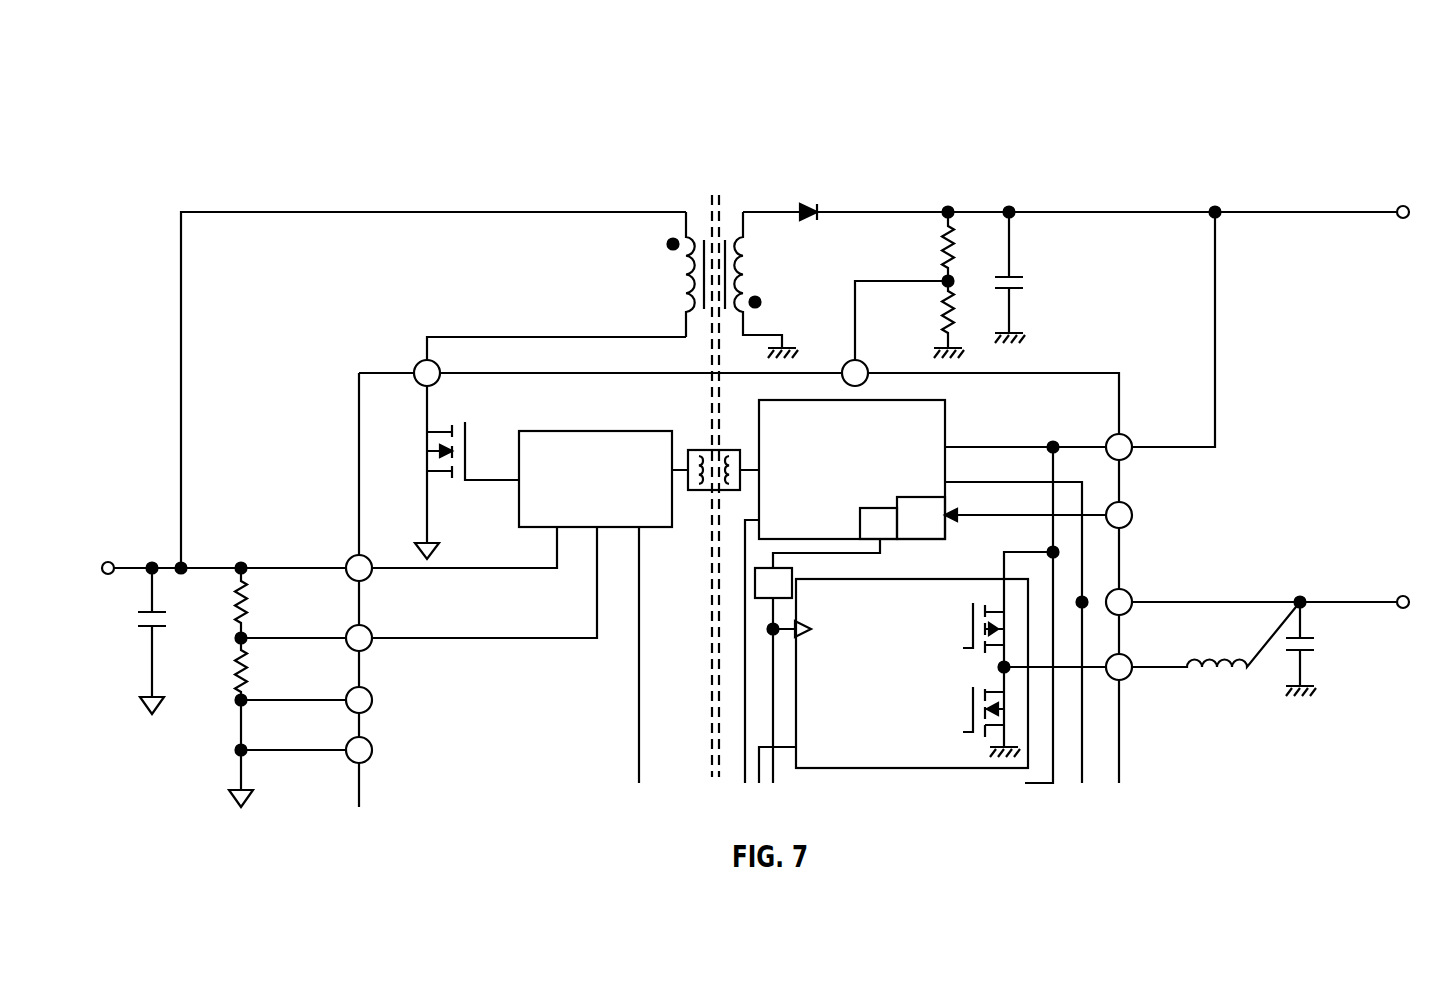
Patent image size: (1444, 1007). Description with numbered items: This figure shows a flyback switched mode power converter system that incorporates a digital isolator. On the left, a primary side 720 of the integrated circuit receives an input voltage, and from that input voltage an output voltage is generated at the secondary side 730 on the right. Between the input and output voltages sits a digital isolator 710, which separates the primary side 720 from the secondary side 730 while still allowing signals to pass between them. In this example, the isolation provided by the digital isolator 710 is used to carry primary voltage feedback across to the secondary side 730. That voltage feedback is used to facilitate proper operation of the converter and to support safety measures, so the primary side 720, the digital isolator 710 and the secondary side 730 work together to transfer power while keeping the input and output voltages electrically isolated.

The digital isolator 710 is at (697, 418).
The primary side 720 is at (355, 140).
The secondary side 730 is at (1198, 172).